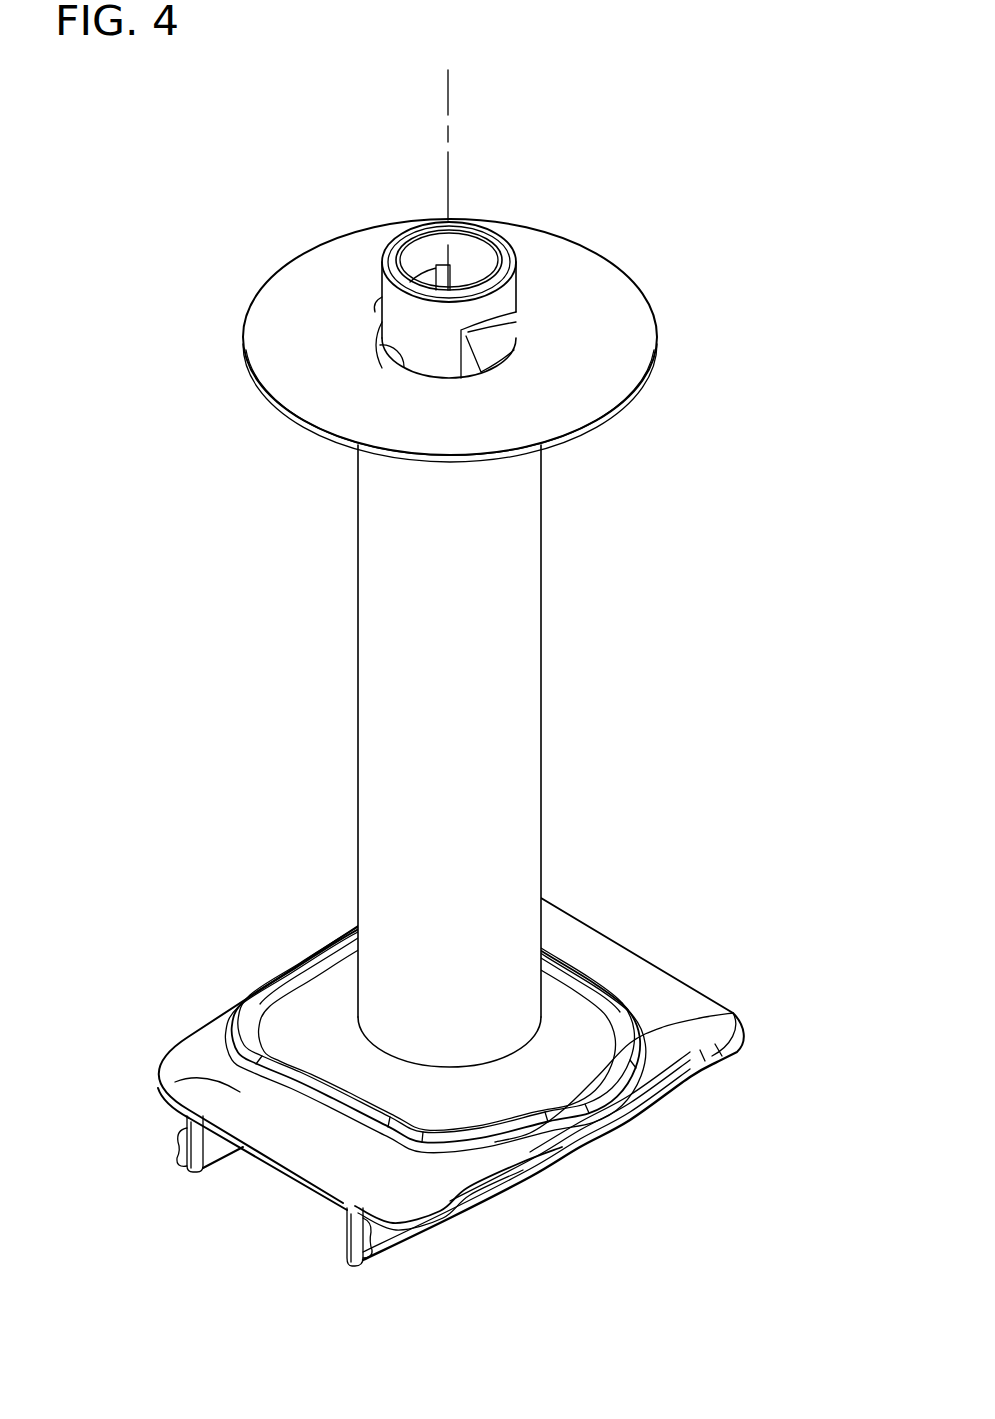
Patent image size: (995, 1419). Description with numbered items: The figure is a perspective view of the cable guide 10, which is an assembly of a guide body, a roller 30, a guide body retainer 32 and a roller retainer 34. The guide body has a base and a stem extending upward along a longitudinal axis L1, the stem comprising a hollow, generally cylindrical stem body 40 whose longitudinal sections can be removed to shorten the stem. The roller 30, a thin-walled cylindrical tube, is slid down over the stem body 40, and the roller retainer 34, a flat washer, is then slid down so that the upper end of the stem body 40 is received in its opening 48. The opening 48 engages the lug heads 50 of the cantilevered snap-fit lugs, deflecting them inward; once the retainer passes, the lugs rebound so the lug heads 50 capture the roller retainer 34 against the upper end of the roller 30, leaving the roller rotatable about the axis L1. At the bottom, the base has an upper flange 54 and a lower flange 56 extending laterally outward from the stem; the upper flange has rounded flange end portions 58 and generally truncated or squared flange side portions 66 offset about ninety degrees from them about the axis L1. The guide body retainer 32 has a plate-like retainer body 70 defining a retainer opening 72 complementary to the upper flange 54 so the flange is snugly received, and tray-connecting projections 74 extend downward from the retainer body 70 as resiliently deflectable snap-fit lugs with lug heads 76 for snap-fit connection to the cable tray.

The cable guide 10 is at (782, 270).
The roller 30 is at (510, 652).
The guide body retainer 32 is at (461, 1085).
The roller retainer 34 is at (596, 280).
The stem body 40 is at (410, 313).
The opening 48 is at (380, 346).
The lug heads 50 is at (508, 342).
The upper flange 54 is at (267, 993).
The lower flange 56 is at (548, 1214).
The flange end portions 58 is at (330, 977).
The flange side portions 66 is at (572, 985).
The retainer body 70 is at (204, 1075).
The retainer opening 72 is at (736, 1014).
The tray-connecting projections 74 is at (213, 1153).
The lug heads 76 is at (180, 1137).
The longitudinal axis L1 is at (449, 162).